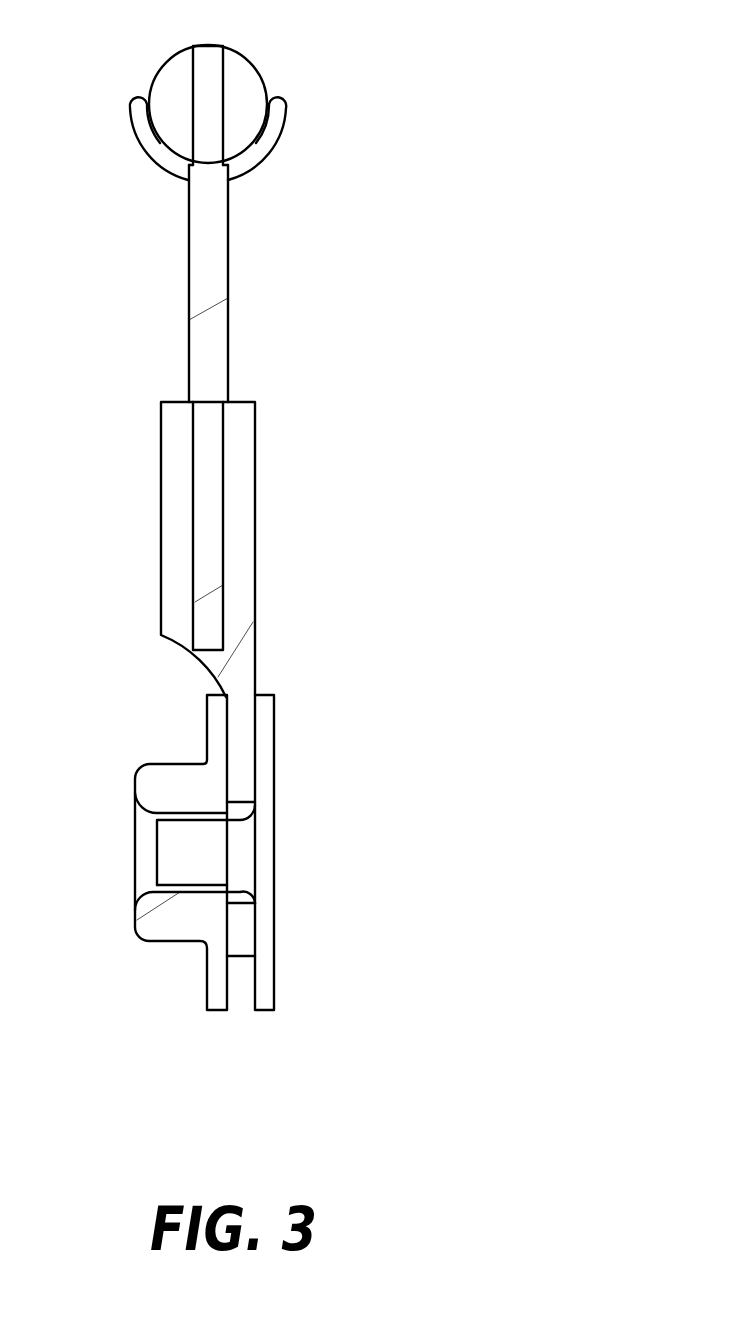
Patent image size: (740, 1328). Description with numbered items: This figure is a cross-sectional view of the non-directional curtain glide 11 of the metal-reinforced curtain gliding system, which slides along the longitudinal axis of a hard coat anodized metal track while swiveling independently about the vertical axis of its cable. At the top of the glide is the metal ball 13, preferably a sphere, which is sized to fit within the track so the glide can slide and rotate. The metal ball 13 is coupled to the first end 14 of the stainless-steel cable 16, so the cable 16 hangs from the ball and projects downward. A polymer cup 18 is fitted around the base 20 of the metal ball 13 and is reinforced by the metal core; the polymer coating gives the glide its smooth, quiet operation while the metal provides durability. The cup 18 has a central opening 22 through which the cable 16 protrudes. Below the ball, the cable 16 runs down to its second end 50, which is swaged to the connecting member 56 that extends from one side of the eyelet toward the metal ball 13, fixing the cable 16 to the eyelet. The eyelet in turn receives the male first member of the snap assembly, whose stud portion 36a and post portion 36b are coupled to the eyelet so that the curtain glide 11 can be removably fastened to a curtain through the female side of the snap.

The curtain glide 11 is at (582, 134).
The metal ball 13 is at (254, 68).
The first end 14 is at (213, 97).
The cable 16 is at (260, 238).
The polymer cup 18 is at (277, 140).
The base 20 is at (157, 143).
The central opening 22 is at (188, 178).
The stud portion 36a is at (160, 941).
The post portion 36b is at (274, 963).
The second end 50 is at (207, 573).
The connecting member 56 is at (254, 508).